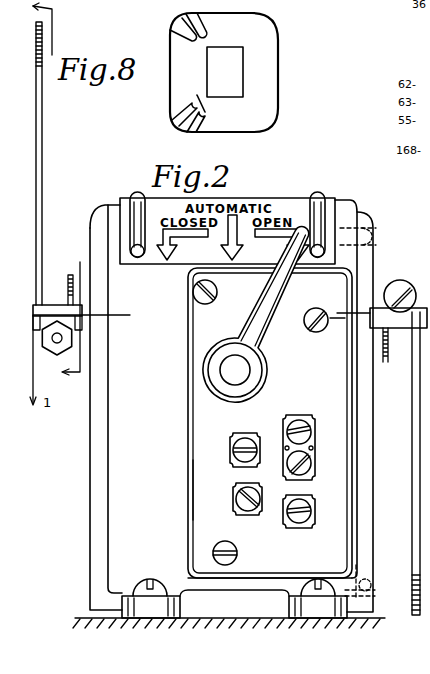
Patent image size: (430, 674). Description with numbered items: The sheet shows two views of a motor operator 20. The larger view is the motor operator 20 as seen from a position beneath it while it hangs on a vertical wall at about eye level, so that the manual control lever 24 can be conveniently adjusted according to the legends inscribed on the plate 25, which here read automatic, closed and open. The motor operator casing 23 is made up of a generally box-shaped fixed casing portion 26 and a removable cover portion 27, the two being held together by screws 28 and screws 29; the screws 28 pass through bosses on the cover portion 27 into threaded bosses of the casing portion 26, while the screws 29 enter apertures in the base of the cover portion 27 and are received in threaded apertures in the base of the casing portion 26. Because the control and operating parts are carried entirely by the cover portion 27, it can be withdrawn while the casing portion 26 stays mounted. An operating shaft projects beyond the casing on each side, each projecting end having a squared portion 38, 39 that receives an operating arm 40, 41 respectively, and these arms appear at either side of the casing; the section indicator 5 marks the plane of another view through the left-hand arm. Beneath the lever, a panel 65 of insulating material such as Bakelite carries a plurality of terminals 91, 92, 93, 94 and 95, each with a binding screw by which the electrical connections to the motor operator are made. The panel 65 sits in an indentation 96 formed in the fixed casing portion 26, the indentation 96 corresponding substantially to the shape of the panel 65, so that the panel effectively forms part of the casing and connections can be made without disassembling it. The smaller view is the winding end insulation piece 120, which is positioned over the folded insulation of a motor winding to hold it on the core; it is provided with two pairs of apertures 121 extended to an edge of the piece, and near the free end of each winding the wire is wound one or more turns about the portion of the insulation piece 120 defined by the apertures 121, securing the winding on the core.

In FIG. 2, the motor operator 20 is at (88, 192).
In FIG. 2, the motor operator casing 23 is at (152, 400).
In FIG. 2, the manual control lever 24 is at (258, 347).
In FIG. 2, the plate 25 is at (298, 198).
In FIG. 2, the box-shaped casing portion 26 is at (125, 456).
In FIG. 2, the cover portion 27 is at (366, 416).
In FIG. 2, the screws 28 is at (374, 233).
In FIG. 2, the screws 29 is at (366, 570).
In FIG. 2, the squared portion 38 is at (400, 330).
In FIG. 2, the squared portion 39 is at (66, 300).
In FIG. 2, the operating arm 40 is at (411, 478).
In FIG. 2, the operating arm 41 is at (43, 218).
In FIG. 2, the section line 5- 5 is at (80, 333).
In FIG. 2, the panel 65 is at (190, 426).
In FIG. 2, the terminal 91 is at (235, 505).
In FIG. 2, the terminal 92 is at (233, 456).
In FIG. 2, the terminal 93 is at (312, 512).
In FIG. 2, the terminal 94 is at (307, 453).
In FIG. 2, the terminal 95 is at (306, 420).
In FIG. 2, the indentation 96 is at (190, 487).
In FIG. 8, the end insulation piece 120 is at (262, 64).
In FIG. 8, the apertures 121 is at (210, 42).